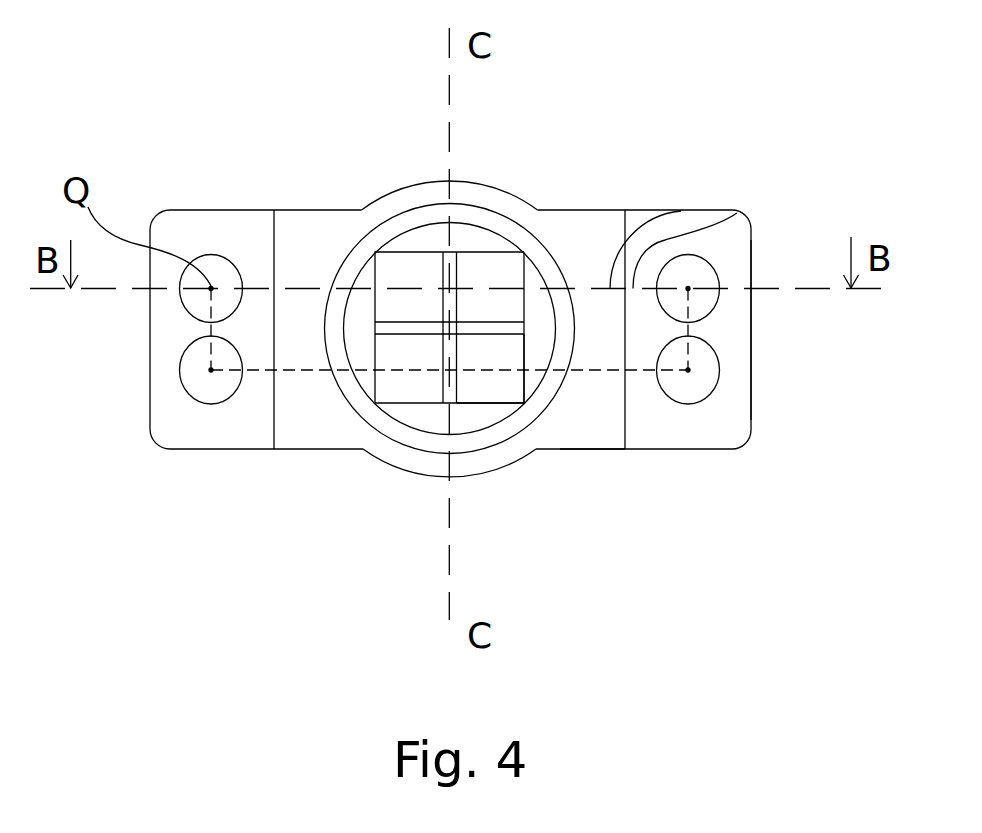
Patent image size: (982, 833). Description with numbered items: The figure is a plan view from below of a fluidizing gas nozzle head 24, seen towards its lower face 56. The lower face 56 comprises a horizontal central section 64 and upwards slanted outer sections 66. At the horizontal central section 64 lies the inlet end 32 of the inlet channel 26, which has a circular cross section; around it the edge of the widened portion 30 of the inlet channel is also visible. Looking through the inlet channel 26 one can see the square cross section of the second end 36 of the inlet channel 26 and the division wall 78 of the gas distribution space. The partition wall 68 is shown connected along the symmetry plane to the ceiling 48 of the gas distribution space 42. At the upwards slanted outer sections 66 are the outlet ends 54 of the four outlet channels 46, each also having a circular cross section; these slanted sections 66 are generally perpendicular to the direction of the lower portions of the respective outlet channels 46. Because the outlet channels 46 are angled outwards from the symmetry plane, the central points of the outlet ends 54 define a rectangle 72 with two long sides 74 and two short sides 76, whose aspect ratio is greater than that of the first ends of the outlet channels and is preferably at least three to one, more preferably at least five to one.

The fluidizing gas nozzle head 24 is at (149, 109).
The inlet channel 26 is at (428, 232).
The widened portion 30 is at (493, 222).
The inlet end 32 is at (397, 248).
The second end 36 is at (408, 403).
The gas distribution space 42 is at (480, 383).
The outlet channels 46 is at (182, 371).
The ceiling 48 is at (510, 378).
The outlet ends 54 is at (220, 390).
The lower face 56 is at (580, 227).
The horizontal central section 64 is at (595, 428).
The upwards slanted outer sections 66 is at (707, 437).
The partition wall 68 is at (440, 393).
The rectangle 72 is at (737, 213).
The long sides 74 is at (681, 211).
The short sides 76 is at (693, 333).
The division wall 78 is at (400, 337).